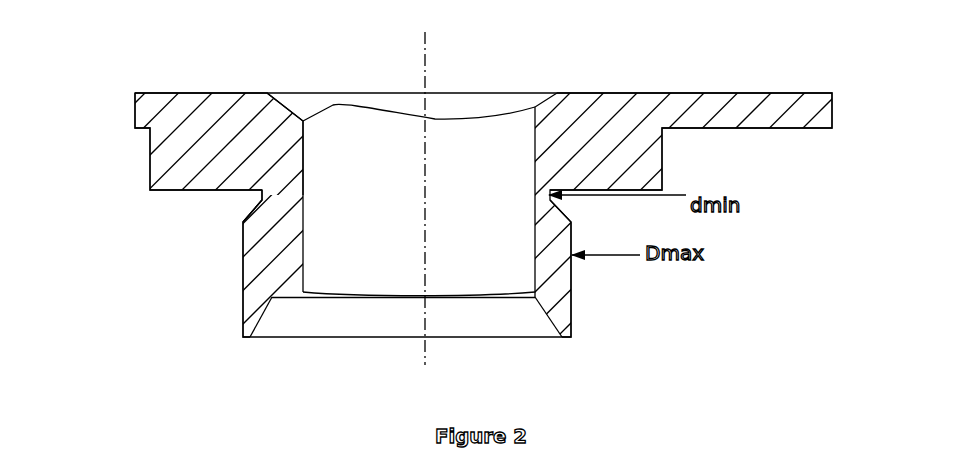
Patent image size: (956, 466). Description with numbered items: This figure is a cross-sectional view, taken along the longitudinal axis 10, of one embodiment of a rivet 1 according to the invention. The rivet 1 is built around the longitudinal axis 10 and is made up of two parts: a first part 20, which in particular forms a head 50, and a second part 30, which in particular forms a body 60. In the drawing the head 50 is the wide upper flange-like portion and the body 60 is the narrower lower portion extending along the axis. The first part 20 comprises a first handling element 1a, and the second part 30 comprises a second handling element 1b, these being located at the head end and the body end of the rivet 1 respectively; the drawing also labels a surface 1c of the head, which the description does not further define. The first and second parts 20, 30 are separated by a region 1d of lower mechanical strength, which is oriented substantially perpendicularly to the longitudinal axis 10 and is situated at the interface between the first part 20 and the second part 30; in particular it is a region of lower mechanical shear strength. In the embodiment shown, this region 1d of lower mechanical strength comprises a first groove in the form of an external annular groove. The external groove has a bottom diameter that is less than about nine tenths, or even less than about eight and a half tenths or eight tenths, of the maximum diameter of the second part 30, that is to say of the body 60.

The rivet 1 is at (645, 105).
The first handling element 1a is at (484, 142).
The second handling element 1b is at (482, 283).
The concave seat surface 1c is at (323, 181).
The region of lower mechanical strength 1d is at (235, 222).
The longitudinal axis 10 is at (424, 63).
The first part 20 is at (130, 90).
The second part 30 is at (238, 335).
The head 50 is at (668, 188).
The body 60 is at (582, 337).